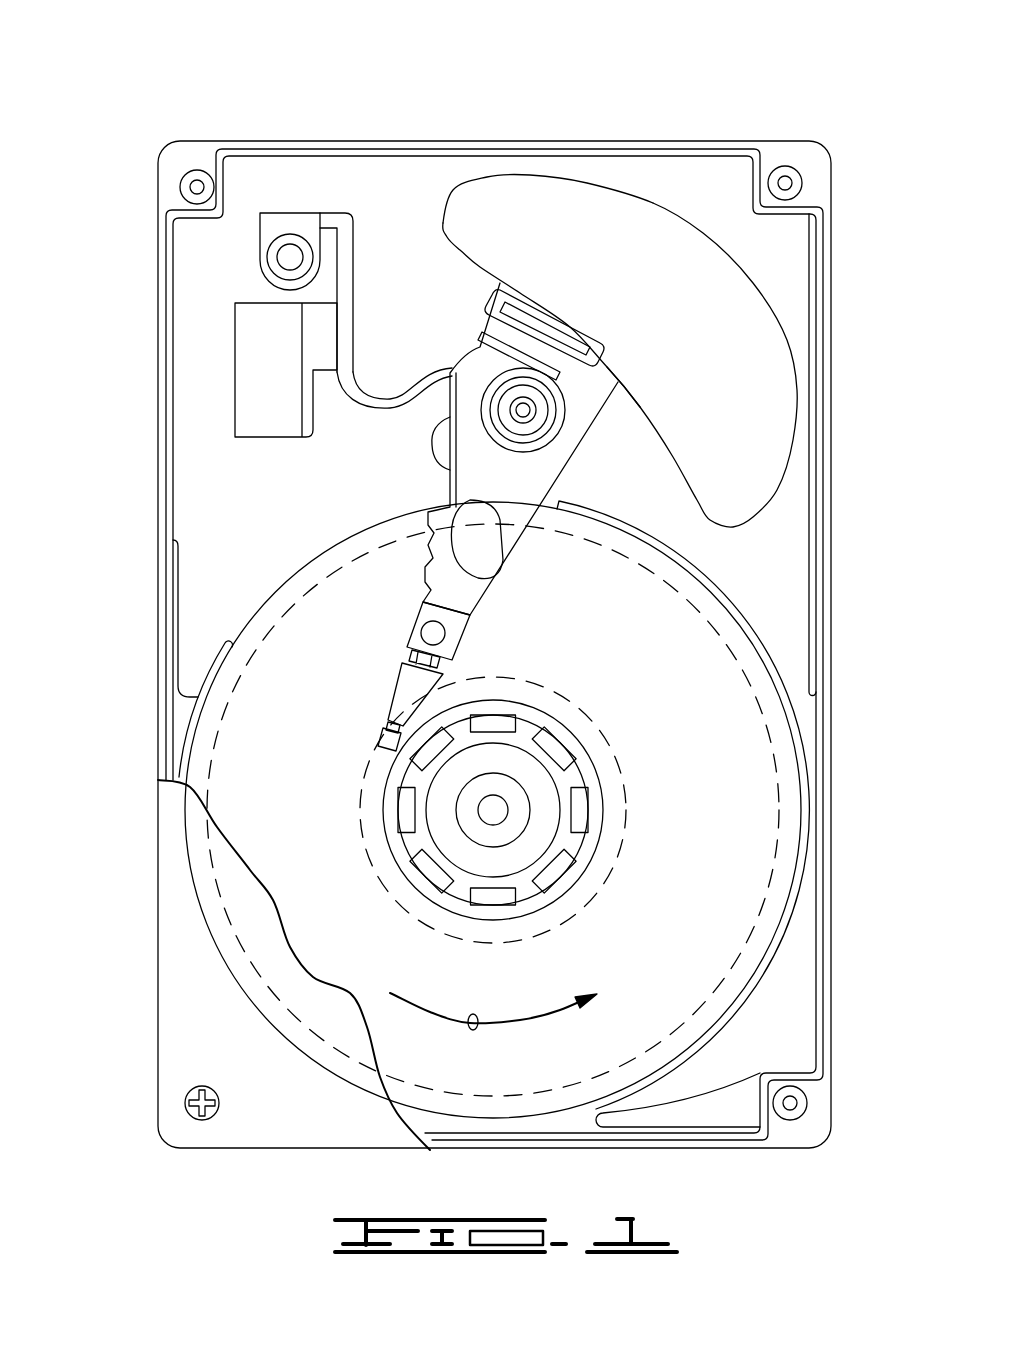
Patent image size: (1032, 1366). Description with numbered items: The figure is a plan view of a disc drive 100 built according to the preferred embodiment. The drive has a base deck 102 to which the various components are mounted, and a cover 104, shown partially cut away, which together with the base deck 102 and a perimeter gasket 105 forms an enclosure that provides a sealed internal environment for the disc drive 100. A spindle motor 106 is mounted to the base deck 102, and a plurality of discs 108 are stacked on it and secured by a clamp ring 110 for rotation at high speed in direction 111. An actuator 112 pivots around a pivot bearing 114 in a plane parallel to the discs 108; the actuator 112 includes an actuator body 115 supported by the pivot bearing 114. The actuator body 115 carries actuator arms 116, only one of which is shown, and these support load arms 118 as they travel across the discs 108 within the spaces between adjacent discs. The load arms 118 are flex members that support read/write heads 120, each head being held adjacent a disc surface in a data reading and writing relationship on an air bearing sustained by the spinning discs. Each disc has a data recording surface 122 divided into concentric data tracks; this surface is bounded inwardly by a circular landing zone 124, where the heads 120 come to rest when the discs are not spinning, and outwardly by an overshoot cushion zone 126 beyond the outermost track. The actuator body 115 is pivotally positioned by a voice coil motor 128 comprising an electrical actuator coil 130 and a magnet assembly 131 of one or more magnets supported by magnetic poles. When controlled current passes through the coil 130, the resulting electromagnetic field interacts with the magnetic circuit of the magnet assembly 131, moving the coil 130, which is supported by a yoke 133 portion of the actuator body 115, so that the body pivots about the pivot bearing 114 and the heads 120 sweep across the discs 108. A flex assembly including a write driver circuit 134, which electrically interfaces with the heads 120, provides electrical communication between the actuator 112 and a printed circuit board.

The disc drive 100 is at (226, 100).
The base deck 102 is at (229, 516).
The cover 104 is at (197, 967).
The perimeter gasket 105 is at (745, 142).
The spindle motor 106 is at (515, 843).
The discs 108 is at (798, 743).
The clamp ring 110 is at (573, 779).
The direction of rotation 111 is at (480, 1030).
The actuator 112 is at (489, 492).
The pivot bearing 114 is at (533, 427).
The actuator body 115 is at (590, 425).
The actuator arms 116 is at (421, 590).
The load arms 118 is at (398, 686).
The read/write heads 120 is at (386, 742).
The data recording surface 122 is at (737, 893).
The landing zone 124 is at (383, 867).
The overshoot cushion zone 126 is at (264, 626).
The voice coil motor 128 is at (490, 195).
The actuator coil 130 is at (517, 307).
The magnet assembly 131 is at (730, 329).
The yoke 133 is at (486, 315).
The write driver circuit 134 is at (441, 438).